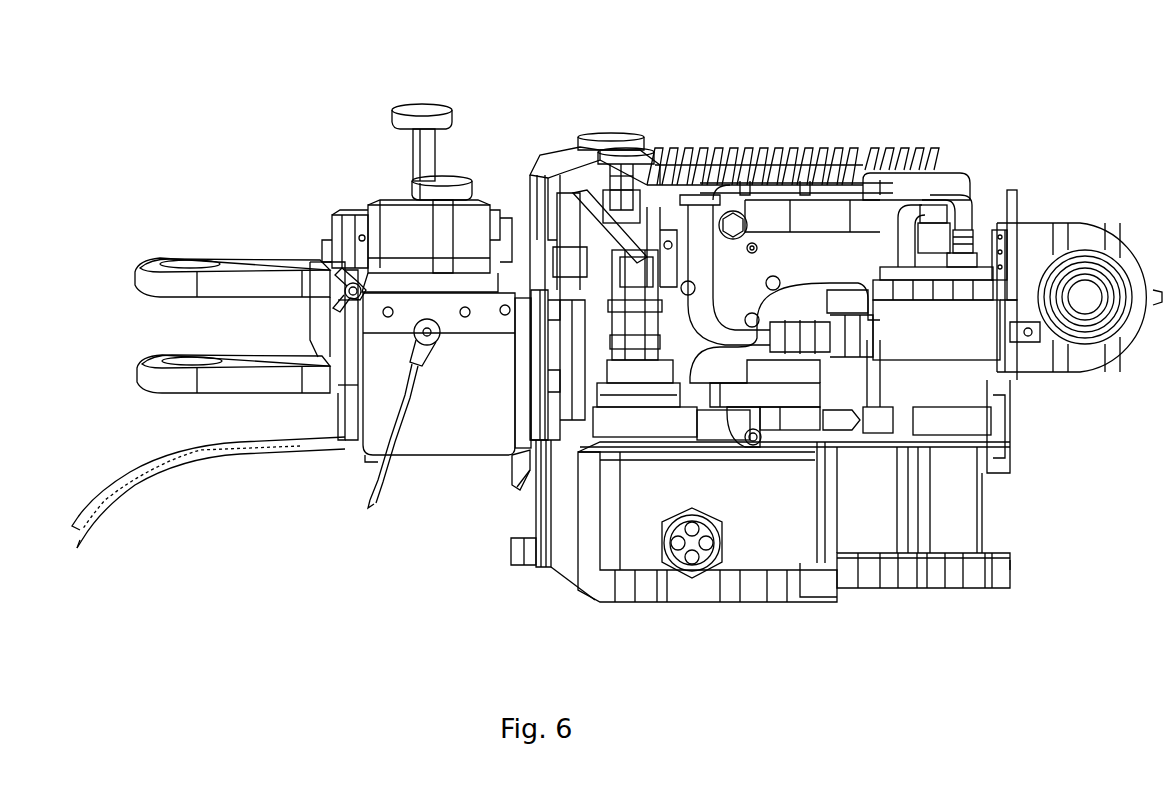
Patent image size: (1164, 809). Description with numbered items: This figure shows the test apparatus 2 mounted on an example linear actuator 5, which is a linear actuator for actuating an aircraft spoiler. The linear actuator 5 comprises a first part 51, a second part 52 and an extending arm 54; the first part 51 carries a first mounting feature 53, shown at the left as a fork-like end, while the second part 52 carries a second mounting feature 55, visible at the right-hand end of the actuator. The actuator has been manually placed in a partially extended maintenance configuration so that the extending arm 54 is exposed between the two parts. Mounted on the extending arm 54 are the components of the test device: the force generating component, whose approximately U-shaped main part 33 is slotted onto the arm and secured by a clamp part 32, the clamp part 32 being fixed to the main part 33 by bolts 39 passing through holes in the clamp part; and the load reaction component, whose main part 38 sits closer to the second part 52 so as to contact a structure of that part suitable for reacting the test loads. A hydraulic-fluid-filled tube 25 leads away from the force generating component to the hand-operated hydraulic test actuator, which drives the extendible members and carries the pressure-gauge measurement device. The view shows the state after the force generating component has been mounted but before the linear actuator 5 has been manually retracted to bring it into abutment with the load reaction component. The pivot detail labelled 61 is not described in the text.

The apparatus 2 is at (528, 142).
The linear actuator 5 is at (866, 81).
The hydraulic-fluid-filled tube 25 is at (213, 458).
The clamp part 32 is at (402, 228).
The main part 33 is at (448, 414).
The main part 38 is at (517, 487).
The bolts 39 is at (440, 190).
The first part 51 is at (1094, 480).
The second part 52 is at (213, 173).
The first mounting feature 53 is at (176, 290).
The extending arm 54 is at (553, 305).
The second mounting feature 55 is at (1087, 242).
The pivot pin 61 is at (352, 290).